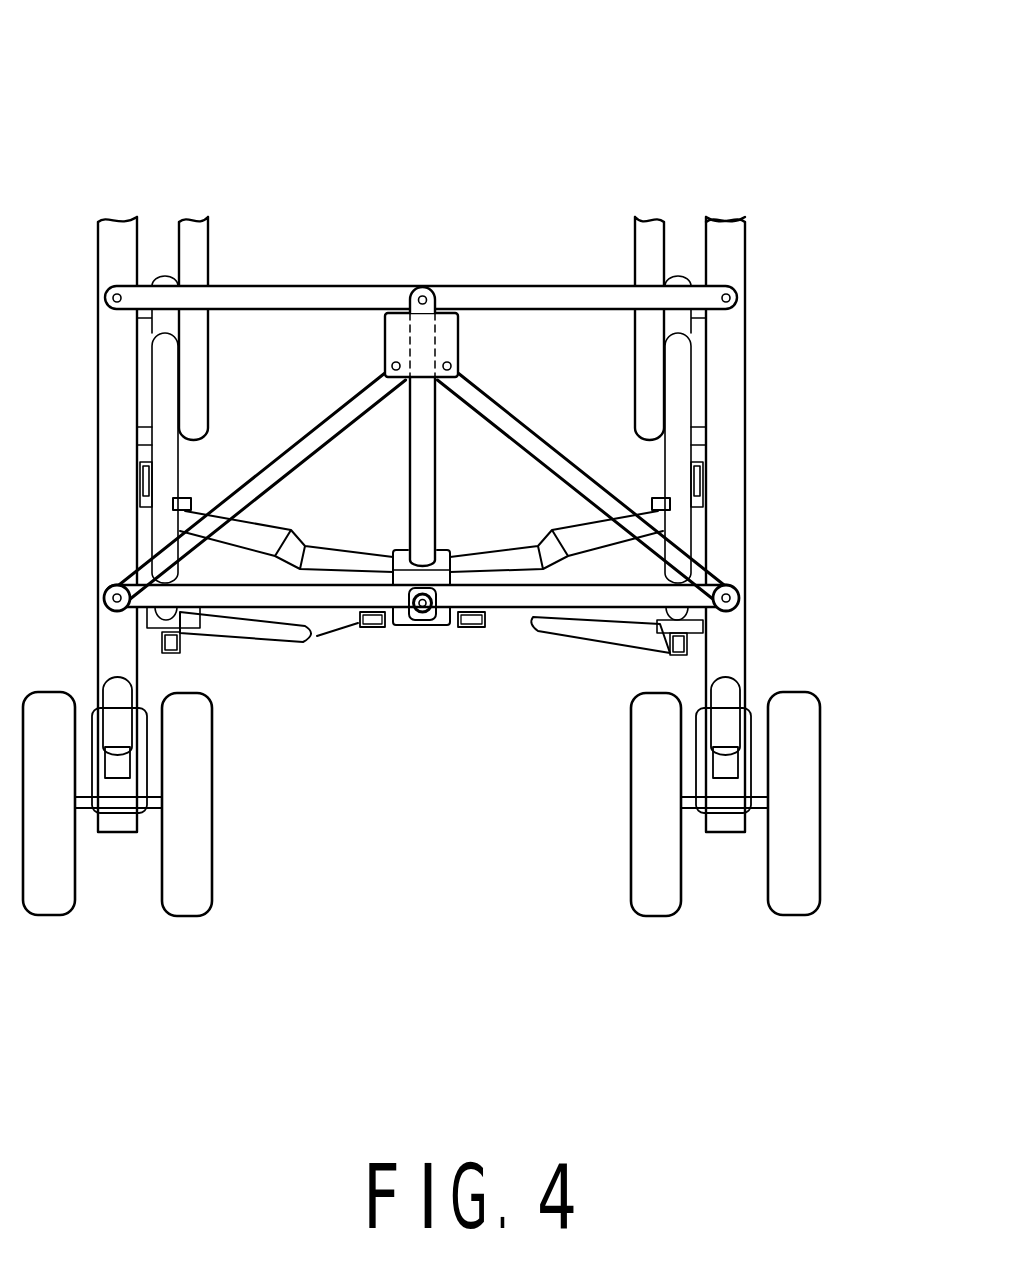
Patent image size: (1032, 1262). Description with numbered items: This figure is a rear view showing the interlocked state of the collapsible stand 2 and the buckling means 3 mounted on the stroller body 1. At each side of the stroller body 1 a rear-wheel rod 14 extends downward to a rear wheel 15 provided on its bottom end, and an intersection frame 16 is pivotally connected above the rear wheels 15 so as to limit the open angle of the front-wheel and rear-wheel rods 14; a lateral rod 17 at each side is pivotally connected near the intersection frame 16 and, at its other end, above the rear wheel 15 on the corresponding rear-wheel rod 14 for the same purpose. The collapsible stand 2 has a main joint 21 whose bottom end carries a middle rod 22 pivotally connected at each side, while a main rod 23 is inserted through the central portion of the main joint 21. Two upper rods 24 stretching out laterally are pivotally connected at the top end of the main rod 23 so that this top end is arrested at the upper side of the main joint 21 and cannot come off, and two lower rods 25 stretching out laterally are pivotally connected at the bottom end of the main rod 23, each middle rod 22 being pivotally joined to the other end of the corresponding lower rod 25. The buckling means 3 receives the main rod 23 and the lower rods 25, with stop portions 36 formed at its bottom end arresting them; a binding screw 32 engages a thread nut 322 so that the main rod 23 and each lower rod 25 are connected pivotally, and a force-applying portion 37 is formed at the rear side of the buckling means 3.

The stroller body 1 is at (755, 245).
The collapsible stand 2 is at (407, 176).
The buckling means 3 is at (447, 553).
The rear-wheel rod 14 is at (745, 543).
The rear wheel 15 is at (818, 818).
The intersection frame 16 is at (600, 640).
The lateral rod 17 is at (677, 370).
The main joint 21 is at (447, 335).
The middle rod 22 is at (520, 425).
The main rod 23 is at (395, 430).
The upper rod 24 is at (249, 285).
The lower rod 25 is at (500, 620).
The binding screw 32 is at (427, 628).
The stop portion 36 is at (478, 630).
The force-applying portion 37 is at (420, 580).
The thread nut 322 is at (385, 632).